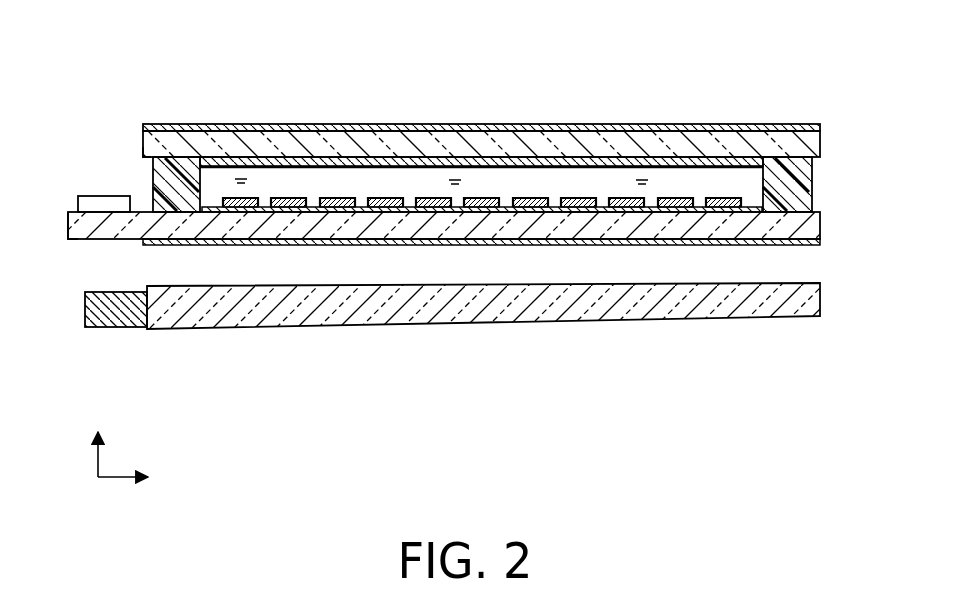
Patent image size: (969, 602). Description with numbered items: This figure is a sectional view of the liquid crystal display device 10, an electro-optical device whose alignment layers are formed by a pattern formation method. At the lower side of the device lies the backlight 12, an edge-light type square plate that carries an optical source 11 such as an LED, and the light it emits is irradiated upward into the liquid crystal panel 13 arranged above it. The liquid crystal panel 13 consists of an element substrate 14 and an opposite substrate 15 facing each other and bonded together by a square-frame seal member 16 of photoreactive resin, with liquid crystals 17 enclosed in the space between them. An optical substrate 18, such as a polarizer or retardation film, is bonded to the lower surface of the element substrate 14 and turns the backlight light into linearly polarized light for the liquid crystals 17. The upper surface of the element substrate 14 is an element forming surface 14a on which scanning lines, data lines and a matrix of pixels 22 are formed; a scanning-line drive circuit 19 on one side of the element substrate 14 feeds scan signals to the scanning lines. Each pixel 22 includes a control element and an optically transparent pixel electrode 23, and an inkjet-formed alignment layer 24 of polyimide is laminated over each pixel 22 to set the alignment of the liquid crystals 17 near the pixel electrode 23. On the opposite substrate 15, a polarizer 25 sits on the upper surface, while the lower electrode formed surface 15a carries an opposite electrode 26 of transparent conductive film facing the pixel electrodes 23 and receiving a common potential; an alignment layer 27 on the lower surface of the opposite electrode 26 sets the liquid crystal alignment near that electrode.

The liquid crystal display device 10 is at (96, 83).
The optical source 11 is at (110, 290).
The backlight 12 is at (822, 299).
The liquid crystal panel 13 is at (868, 143).
The element substrate 14 is at (822, 212).
The element forming surface 14a is at (70, 212).
The opposite substrate 15 is at (822, 147).
The electrode formed surface 15a is at (143, 157).
The seal member 16 is at (153, 173).
The liquid crystals 17 is at (750, 182).
The optical substrate 18 is at (822, 242).
The scanning-line drive circuit 19 is at (88, 195).
The pixel 22 is at (260, 224).
The pixel electrode 23 is at (388, 213).
The alignment layer 24 is at (289, 197).
The polarizer 25 is at (802, 123).
The opposite electrode 26 is at (562, 156).
The alignment layer 27 is at (371, 166).